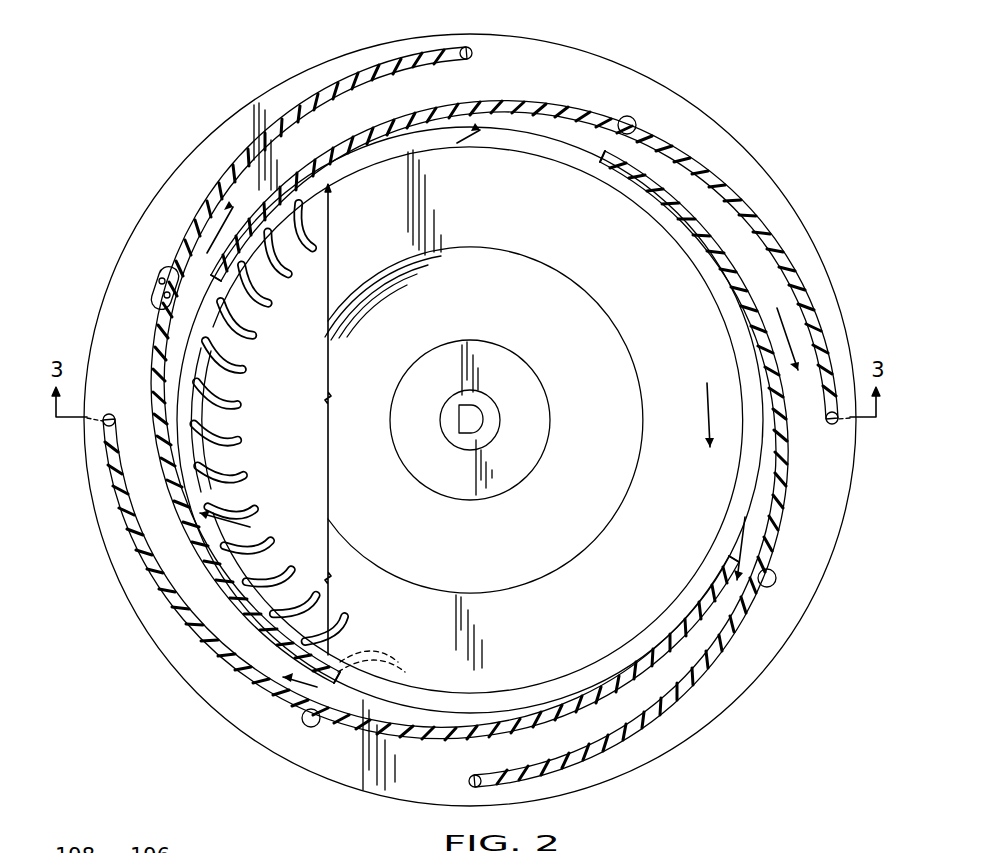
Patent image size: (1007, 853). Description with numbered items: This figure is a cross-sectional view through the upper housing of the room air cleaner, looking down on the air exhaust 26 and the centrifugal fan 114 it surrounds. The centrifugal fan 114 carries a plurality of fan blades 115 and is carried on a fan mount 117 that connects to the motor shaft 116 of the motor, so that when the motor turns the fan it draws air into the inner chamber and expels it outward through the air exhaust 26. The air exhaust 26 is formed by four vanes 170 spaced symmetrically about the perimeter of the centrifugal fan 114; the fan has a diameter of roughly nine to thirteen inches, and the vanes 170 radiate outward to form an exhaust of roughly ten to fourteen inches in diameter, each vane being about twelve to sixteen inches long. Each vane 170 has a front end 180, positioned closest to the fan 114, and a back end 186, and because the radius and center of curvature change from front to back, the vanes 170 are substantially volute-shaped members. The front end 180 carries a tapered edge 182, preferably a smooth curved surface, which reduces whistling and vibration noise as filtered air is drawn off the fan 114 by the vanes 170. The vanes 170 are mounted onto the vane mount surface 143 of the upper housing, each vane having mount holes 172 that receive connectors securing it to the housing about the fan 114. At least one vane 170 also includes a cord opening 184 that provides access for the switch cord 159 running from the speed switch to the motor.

The air exhaust 26 is at (735, 165).
The centrifugal fan 114 is at (528, 157).
The fan blades 115 is at (240, 363).
The motor shaft 116 is at (483, 417).
The fan mount 117 is at (492, 436).
The vane mount surface 143 is at (335, 757).
The switch cord 159 is at (158, 293).
The vanes 170 is at (305, 100).
The mount holes 172 is at (634, 118).
The front end 180 is at (596, 160).
The tapered edge 182 is at (300, 268).
The cord opening 184 is at (165, 277).
The back end 186 is at (470, 53).